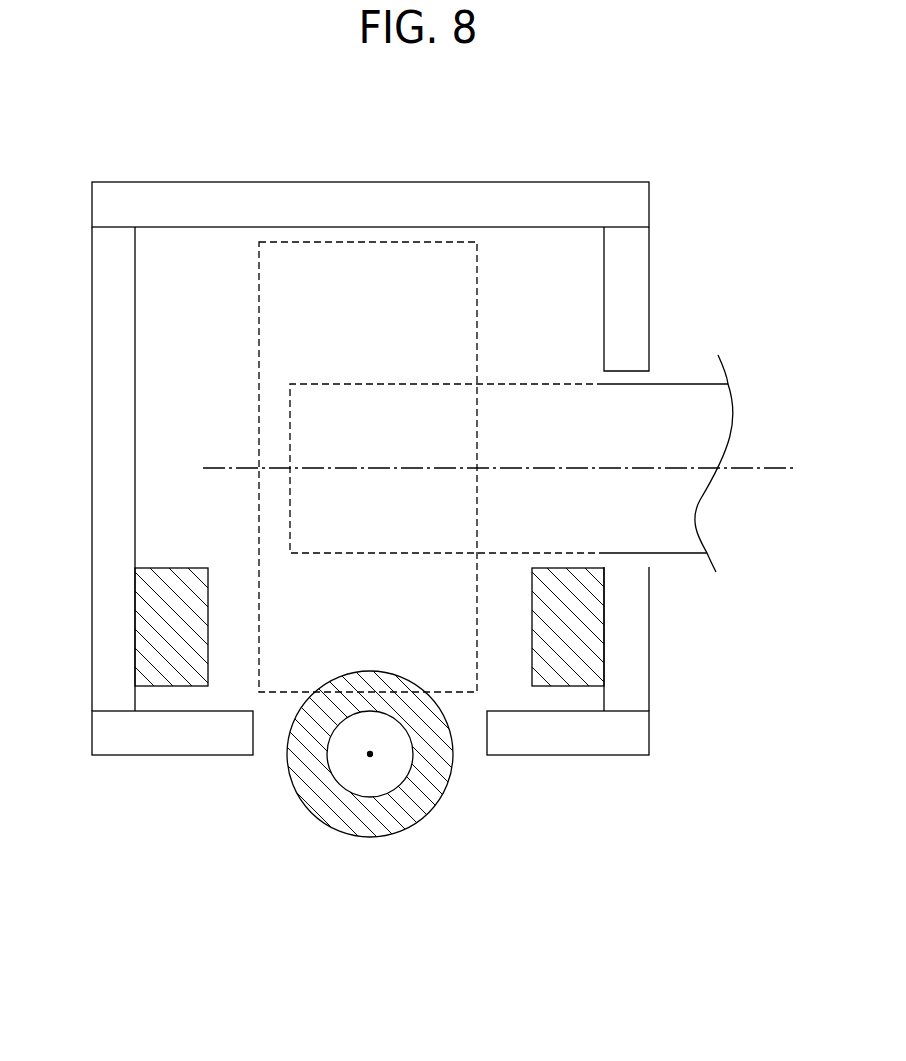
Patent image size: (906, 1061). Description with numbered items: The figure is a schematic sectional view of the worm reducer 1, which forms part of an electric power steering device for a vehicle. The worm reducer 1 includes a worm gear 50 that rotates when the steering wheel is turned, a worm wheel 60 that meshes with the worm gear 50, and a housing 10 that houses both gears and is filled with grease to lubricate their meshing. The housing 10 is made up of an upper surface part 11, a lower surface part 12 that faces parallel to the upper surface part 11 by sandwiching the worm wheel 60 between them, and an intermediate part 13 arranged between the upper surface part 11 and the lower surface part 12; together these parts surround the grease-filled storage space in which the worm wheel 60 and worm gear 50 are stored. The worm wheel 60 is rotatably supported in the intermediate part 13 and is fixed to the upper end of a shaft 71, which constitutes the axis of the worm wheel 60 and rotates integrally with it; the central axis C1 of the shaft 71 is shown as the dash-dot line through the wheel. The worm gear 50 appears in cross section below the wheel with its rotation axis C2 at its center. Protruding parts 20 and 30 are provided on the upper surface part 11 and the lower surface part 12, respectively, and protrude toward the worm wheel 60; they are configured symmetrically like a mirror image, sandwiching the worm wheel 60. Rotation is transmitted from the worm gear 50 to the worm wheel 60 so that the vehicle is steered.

The worm reducer 1 is at (590, 140).
The housing 10 is at (99, 162).
The upper surface part 11 is at (92, 372).
The lower surface part 12 is at (650, 270).
The intermediate part 13 is at (211, 182).
The protruding part 20 is at (165, 703).
The protruding part 30 is at (564, 703).
The worm gear 50 is at (367, 837).
The worm wheel 60 is at (370, 242).
The shaft 71 is at (675, 384).
The central axis C1 is at (760, 470).
The rotation axis C2 is at (370, 758).